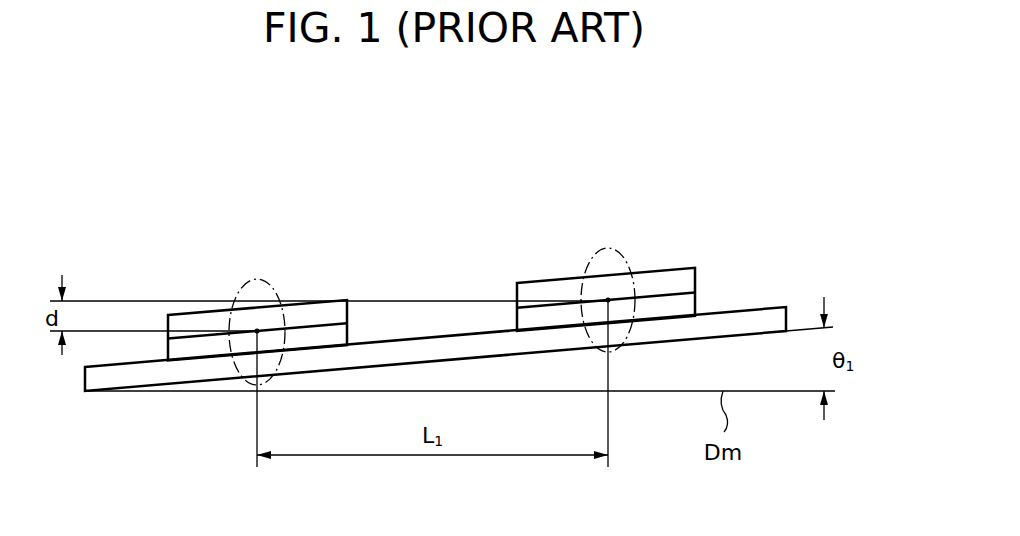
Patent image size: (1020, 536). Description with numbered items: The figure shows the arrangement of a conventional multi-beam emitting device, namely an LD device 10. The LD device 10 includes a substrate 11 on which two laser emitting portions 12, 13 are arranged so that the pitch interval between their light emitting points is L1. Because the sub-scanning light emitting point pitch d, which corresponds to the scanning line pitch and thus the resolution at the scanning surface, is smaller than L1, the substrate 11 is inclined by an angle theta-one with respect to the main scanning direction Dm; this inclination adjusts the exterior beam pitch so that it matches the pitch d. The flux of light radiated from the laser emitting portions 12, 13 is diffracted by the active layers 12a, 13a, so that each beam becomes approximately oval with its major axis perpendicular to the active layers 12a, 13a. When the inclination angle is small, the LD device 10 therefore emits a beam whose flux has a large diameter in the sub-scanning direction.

The LD device 10 is at (800, 217).
The substrate 11 is at (755, 310).
The laser emitting portion 12 is at (210, 307).
The active layer 12a is at (257, 331).
The laser emitting portion 13 is at (658, 267).
The active layer 13a is at (608, 300).